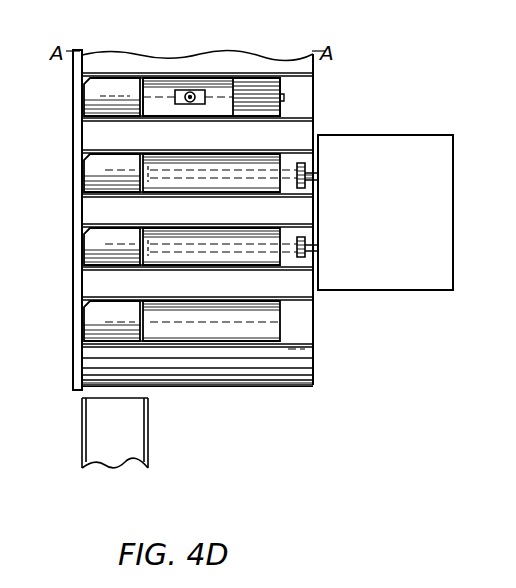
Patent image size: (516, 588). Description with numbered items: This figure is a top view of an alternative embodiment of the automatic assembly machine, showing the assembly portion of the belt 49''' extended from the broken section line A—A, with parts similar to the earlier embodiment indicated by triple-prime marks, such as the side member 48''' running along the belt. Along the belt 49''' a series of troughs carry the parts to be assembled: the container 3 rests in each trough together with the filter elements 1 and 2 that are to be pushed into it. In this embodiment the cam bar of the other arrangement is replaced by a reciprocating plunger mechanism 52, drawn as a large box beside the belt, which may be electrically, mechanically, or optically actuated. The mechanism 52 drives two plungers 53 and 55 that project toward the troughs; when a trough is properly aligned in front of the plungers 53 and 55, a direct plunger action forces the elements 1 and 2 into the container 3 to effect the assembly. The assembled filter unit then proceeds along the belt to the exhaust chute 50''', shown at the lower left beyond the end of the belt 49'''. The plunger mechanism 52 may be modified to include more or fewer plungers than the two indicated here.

The drive/motor block 1 is at (265, 88).
The roller 2 is at (199, 90).
The container 3 is at (118, 84).
The side wall of frame 48''' is at (167, 220).
The belt 49''' is at (235, 372).
The exhaust chute 50''' is at (89, 433).
The reciprocating plunger mechanism 52 is at (395, 134).
The plunger 53 is at (300, 162).
The plunger 55 is at (305, 258).